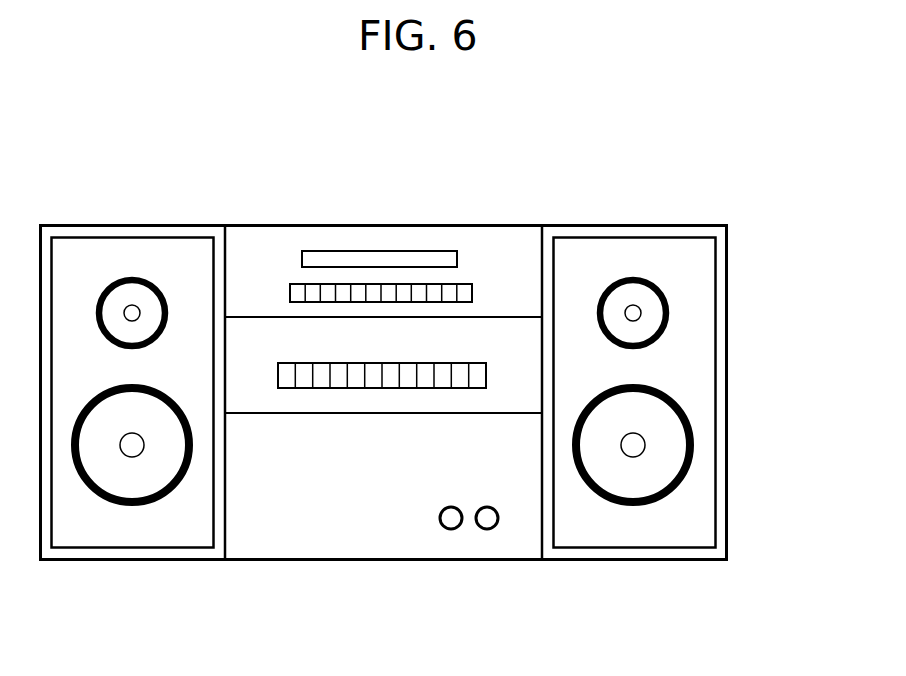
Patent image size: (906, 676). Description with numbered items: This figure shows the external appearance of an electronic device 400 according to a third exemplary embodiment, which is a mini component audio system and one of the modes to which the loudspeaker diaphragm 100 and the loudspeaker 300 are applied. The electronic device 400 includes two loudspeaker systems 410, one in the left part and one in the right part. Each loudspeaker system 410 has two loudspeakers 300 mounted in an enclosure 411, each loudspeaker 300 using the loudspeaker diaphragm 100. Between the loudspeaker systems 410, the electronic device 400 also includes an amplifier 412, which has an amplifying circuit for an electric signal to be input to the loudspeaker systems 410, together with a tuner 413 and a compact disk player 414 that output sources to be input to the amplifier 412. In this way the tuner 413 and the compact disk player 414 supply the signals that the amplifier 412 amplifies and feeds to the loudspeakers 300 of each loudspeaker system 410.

The electronic device 400 is at (462, 171).
The loudspeaker system 410 is at (132, 226).
The enclosure 411 is at (558, 567).
The amplifier 412 is at (310, 543).
The tuner 413 is at (249, 335).
The compact disk (CD) player 414 is at (315, 226).
The loudspeaker diaphragm 100 is at (647, 300).
The loudspeaker 300 is at (668, 316).